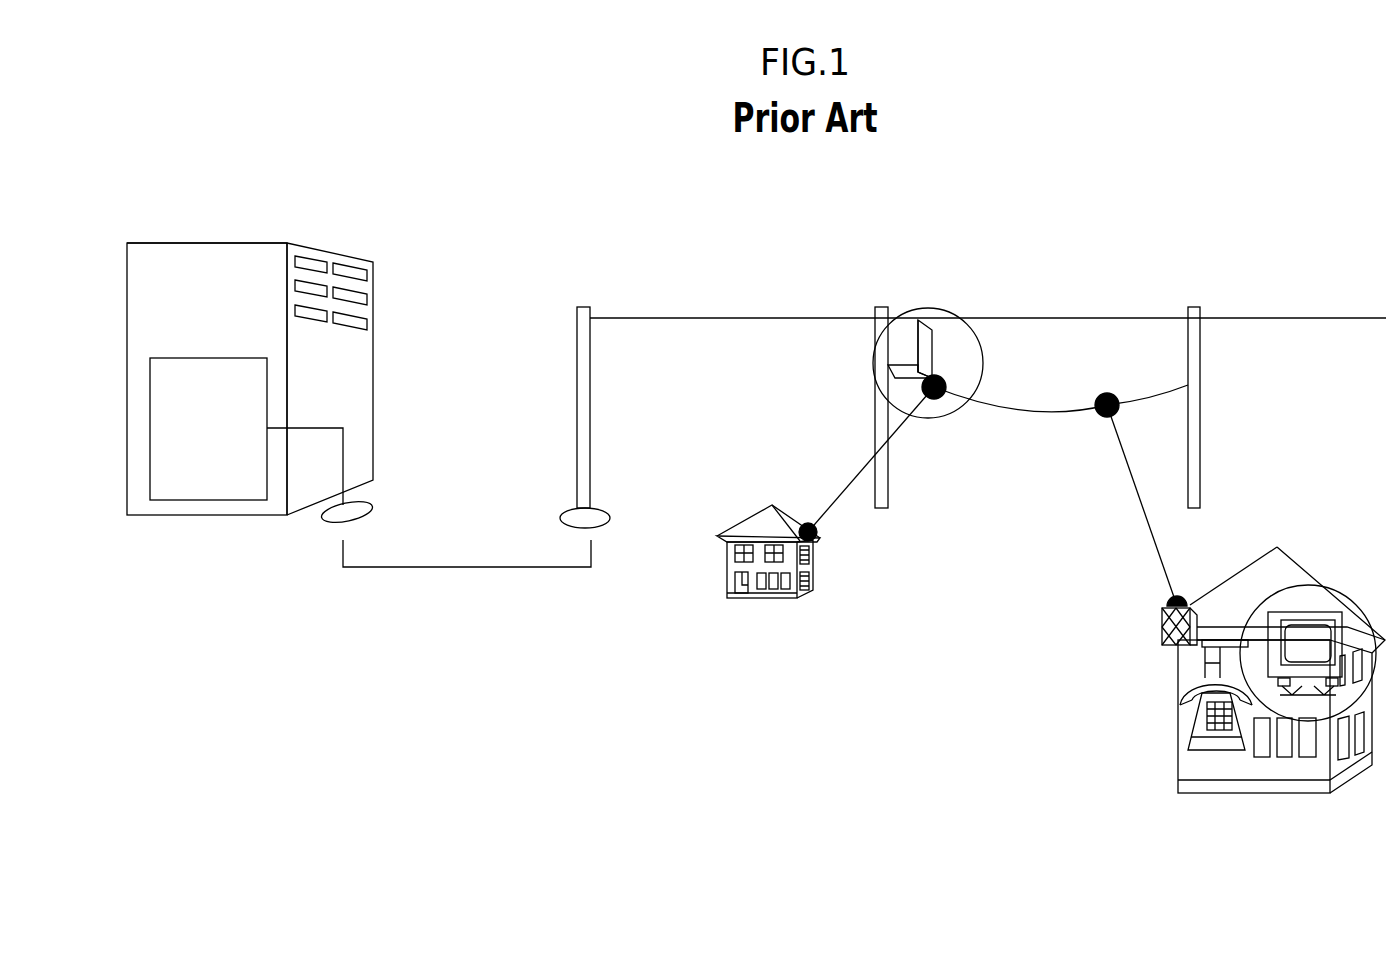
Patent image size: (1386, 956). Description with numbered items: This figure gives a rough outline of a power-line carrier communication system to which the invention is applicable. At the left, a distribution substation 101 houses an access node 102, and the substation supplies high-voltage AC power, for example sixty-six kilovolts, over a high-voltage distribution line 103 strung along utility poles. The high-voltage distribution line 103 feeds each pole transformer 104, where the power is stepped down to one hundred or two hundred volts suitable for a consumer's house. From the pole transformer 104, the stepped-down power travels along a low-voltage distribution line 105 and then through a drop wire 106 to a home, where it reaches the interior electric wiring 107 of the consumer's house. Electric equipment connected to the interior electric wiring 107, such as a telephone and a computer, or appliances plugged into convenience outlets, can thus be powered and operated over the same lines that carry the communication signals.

The distribution substation 101 is at (359, 386).
The access node 102 is at (203, 501).
The high-voltage distribution line 103 is at (628, 316).
The pole transformer 104 is at (905, 322).
The low-voltage distribution line 105 is at (1030, 410).
The drop wire 106 is at (1141, 528).
The interior electric wiring 107 is at (1200, 652).